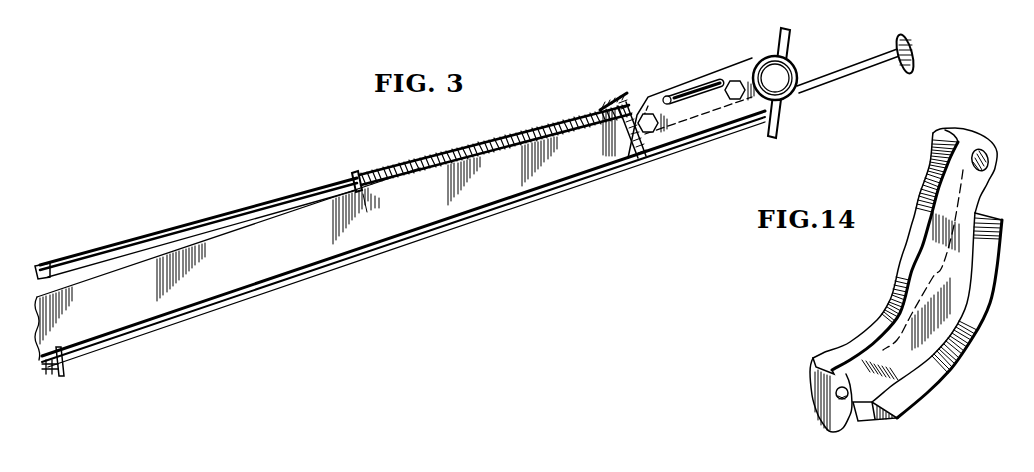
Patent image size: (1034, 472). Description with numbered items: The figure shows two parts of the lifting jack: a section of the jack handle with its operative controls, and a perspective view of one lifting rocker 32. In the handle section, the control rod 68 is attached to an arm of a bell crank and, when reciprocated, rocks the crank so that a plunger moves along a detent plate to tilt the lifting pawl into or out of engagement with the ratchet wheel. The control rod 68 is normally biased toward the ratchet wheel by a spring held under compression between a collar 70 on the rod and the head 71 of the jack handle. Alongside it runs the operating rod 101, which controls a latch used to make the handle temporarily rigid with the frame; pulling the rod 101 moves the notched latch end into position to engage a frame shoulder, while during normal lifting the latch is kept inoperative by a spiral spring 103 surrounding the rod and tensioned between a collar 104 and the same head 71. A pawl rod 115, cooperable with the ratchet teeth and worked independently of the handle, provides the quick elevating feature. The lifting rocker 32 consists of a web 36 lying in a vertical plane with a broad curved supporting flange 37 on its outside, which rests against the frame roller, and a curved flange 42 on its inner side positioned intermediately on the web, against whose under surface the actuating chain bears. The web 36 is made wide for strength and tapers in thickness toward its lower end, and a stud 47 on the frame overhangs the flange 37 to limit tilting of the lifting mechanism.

In FIG. 3, the control rod 68 is at (42, 262).
In FIG. 3, the operating rod 101 is at (232, 207).
In FIG. 3, the collar 70 is at (357, 171).
In FIG. 3, the collar 104 is at (360, 196).
In FIG. 3, the spiral spring 103 is at (513, 150).
In FIG. 3, the head of the jack handle 71 is at (700, 78).
In FIG. 3, the pawl rod 115 is at (842, 82).
In FIG. 14, the web 36 is at (950, 226).
In FIG. 14, the lifting rocker 32 is at (893, 280).
In FIG. 14, the curved flange 42 is at (903, 281).
In FIG. 14, the supporting flange 37 is at (927, 391).
In FIG. 14, the stud 47 is at (836, 409).